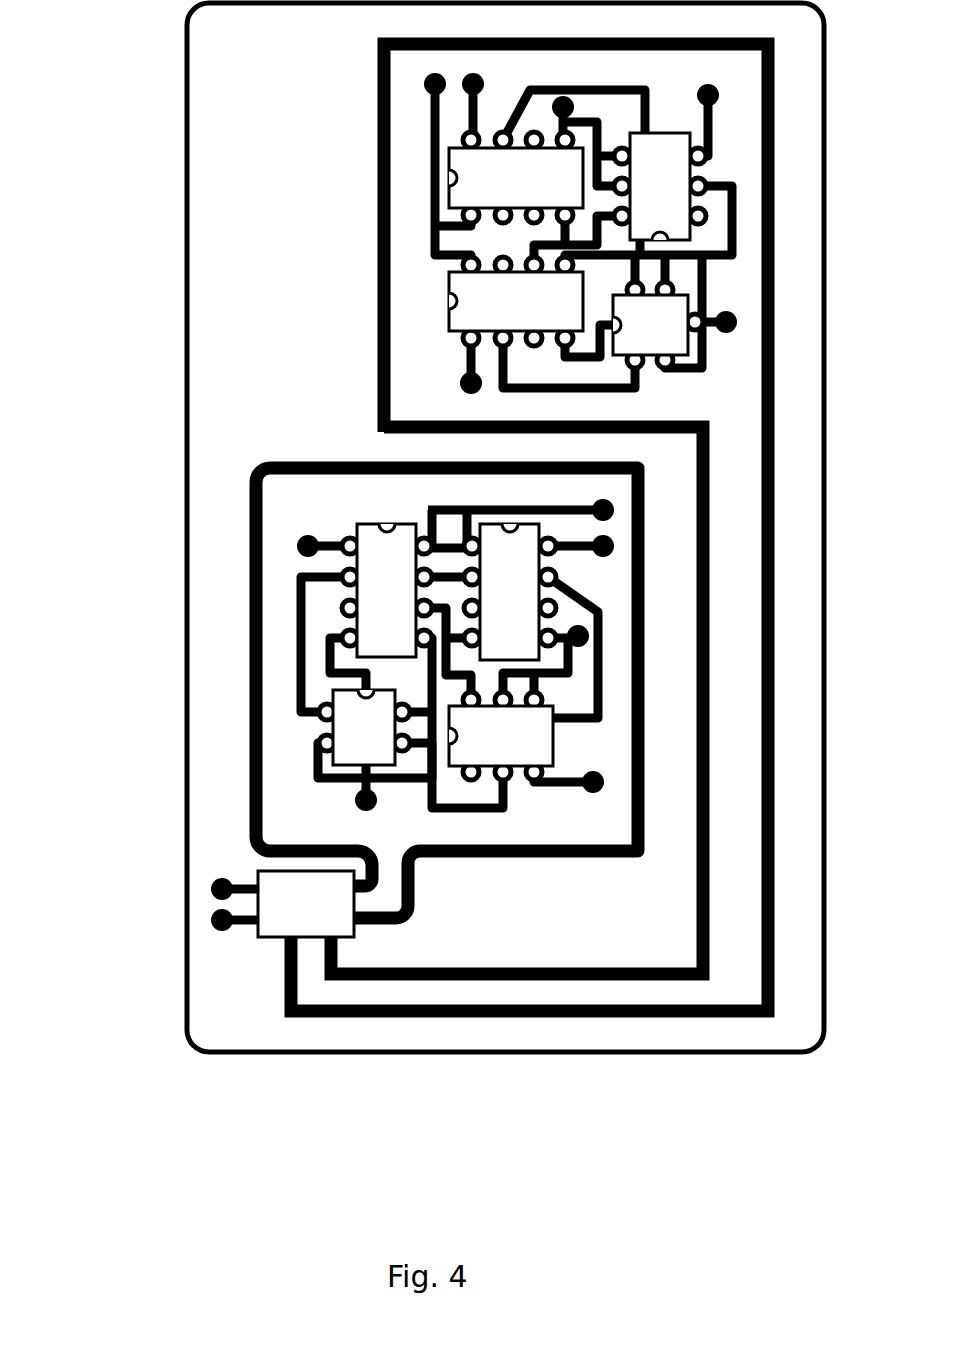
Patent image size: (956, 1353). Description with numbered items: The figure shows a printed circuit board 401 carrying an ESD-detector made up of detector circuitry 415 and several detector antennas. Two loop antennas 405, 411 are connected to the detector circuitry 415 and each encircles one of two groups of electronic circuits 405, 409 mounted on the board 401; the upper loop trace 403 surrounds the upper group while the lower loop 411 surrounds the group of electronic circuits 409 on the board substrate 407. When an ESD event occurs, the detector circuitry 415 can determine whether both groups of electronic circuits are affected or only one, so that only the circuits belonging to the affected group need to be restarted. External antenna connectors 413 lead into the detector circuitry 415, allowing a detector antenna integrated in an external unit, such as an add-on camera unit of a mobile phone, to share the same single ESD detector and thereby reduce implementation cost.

The printed circuit board assembly 401 is at (183, 85).
The power trace loop 403 is at (382, 197).
The loop antenna 405 is at (437, 288).
The board substrate 407 is at (278, 385).
The group of electronic circuits 409 is at (385, 592).
The loop antenna 411 is at (250, 743).
The external antenna connectors 413 is at (222, 890).
The detector circuitry 415 is at (258, 934).